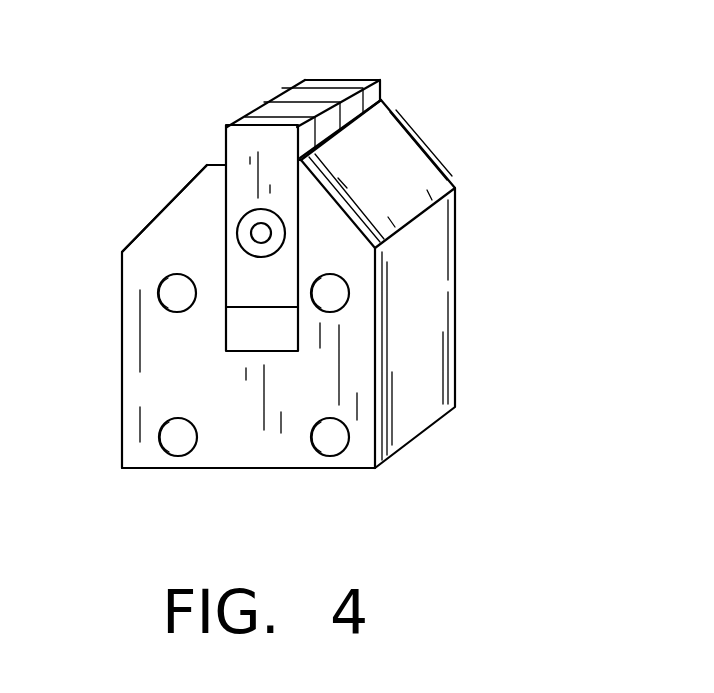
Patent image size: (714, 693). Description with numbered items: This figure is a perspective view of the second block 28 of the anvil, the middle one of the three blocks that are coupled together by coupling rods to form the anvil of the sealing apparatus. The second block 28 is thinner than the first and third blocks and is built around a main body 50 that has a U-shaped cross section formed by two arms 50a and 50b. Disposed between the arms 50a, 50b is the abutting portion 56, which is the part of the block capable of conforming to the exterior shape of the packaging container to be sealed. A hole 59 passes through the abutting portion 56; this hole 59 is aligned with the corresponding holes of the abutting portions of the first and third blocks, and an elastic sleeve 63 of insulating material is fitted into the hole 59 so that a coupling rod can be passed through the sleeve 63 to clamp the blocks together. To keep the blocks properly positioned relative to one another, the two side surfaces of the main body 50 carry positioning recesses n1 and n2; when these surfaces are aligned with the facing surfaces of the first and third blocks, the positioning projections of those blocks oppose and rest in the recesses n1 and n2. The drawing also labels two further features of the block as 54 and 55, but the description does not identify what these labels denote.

The second block 28 is at (347, 280).
The main body 50 is at (440, 412).
The arm 50a is at (187, 225).
The arm 50b is at (327, 227).
The bottom surface 54 is at (257, 437).
The side face 55 is at (455, 353).
The abutting portion 56 is at (342, 80).
The hole 59 is at (243, 221).
The sleeve 63 is at (261, 250).
The positioning recess n1 is at (177, 293).
The positioning recess n2 is at (330, 293).